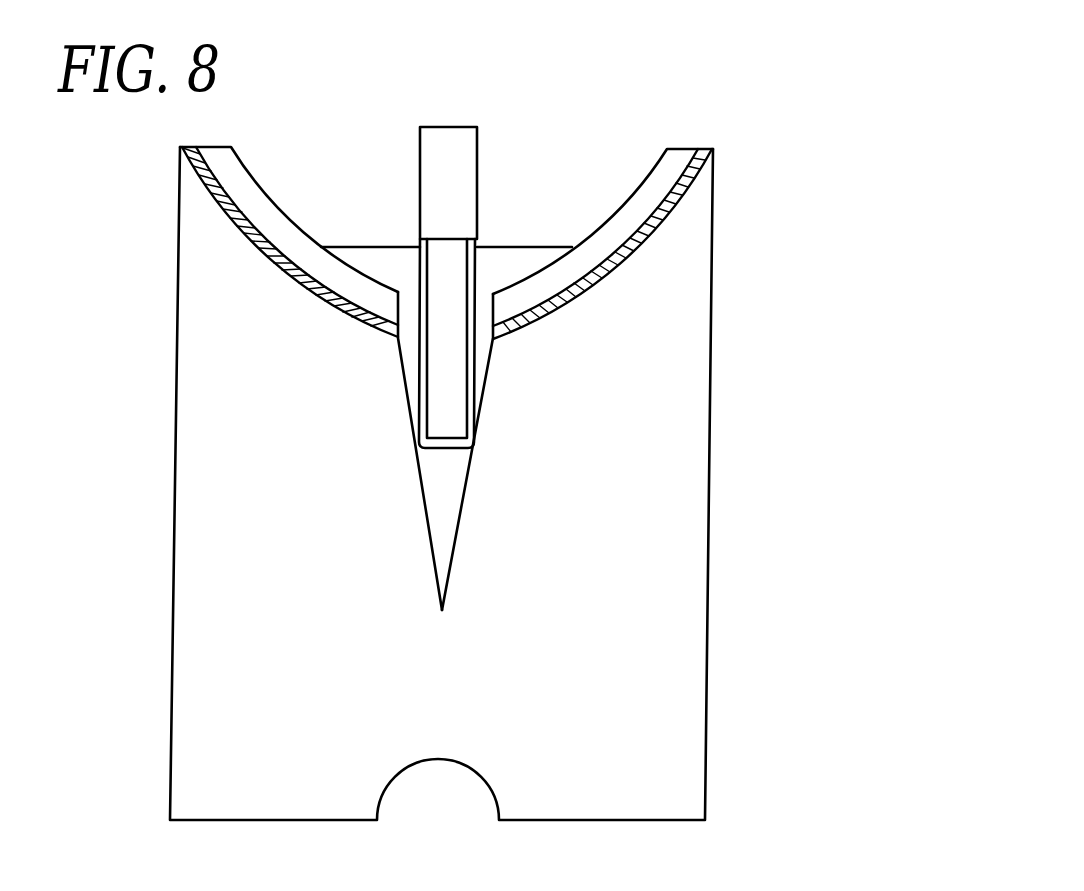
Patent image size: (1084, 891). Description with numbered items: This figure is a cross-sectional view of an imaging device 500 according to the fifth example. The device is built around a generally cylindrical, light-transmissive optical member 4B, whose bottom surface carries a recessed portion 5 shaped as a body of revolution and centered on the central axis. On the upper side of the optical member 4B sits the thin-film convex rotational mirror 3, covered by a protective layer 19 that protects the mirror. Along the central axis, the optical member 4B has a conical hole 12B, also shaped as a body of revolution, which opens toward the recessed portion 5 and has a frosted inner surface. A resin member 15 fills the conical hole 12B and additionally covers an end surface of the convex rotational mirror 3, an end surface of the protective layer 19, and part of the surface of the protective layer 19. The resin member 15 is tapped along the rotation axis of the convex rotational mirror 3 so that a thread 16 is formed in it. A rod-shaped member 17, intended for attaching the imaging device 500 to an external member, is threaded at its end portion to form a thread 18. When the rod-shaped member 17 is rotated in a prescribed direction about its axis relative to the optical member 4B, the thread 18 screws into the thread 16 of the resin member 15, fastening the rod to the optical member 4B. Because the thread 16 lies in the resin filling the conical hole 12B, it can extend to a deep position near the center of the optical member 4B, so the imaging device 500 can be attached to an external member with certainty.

The imaging device 500 is at (790, 134).
The optical member 4B is at (825, 602).
The recessed portion 5 is at (233, 220).
The protective layer 19 is at (270, 202).
The convex rotational mirror 3 is at (213, 178).
The rod-shaped member 17 is at (480, 165).
The thread 18 is at (465, 388).
The thread 16 is at (475, 407).
The conical hole 12B is at (445, 477).
The resin member 15 is at (445, 537).